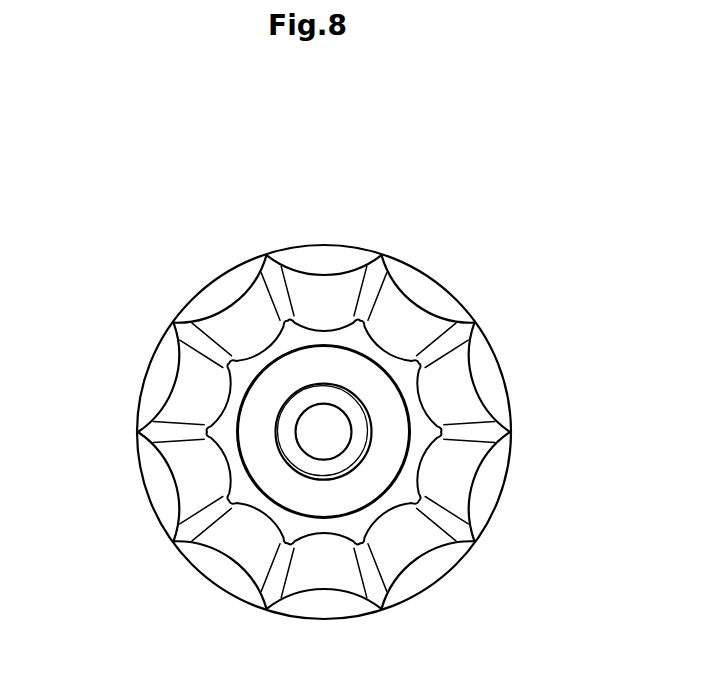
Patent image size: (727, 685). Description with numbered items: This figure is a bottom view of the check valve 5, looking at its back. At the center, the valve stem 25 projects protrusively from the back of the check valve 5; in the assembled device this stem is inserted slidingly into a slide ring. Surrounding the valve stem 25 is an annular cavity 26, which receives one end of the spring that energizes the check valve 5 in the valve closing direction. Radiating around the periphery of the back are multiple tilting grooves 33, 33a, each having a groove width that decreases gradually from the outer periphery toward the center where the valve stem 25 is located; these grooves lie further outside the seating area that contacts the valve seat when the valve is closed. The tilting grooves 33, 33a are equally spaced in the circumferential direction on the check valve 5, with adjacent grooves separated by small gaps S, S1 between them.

The check valve 5 is at (433, 241).
The small gap S is at (193, 342).
The small gap S1 is at (272, 281).
The tilting groove 33 is at (240, 320).
The tilting groove 33a is at (323, 296).
The valve stem 25 is at (356, 414).
The annular cavity 26 is at (394, 437).